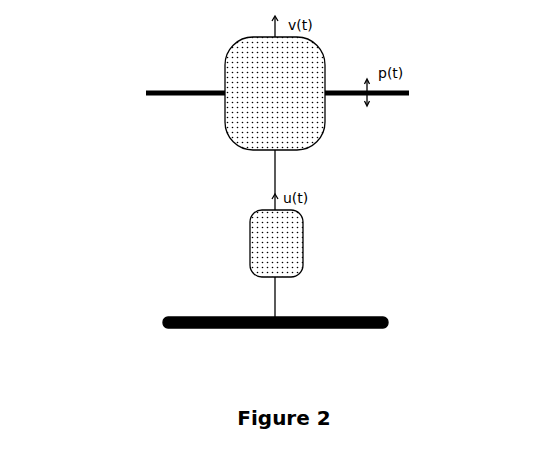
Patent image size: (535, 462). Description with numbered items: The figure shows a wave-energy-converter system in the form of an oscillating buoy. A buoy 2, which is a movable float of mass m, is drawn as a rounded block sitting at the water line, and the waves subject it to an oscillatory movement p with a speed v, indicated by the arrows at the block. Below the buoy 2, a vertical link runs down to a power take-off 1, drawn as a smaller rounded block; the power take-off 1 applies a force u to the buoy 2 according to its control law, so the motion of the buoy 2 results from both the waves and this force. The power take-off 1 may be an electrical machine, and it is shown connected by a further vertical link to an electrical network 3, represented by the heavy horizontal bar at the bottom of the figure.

The power take-off 1 is at (222, 240).
The buoy 2 is at (197, 68).
The electrical network 3 is at (153, 317).